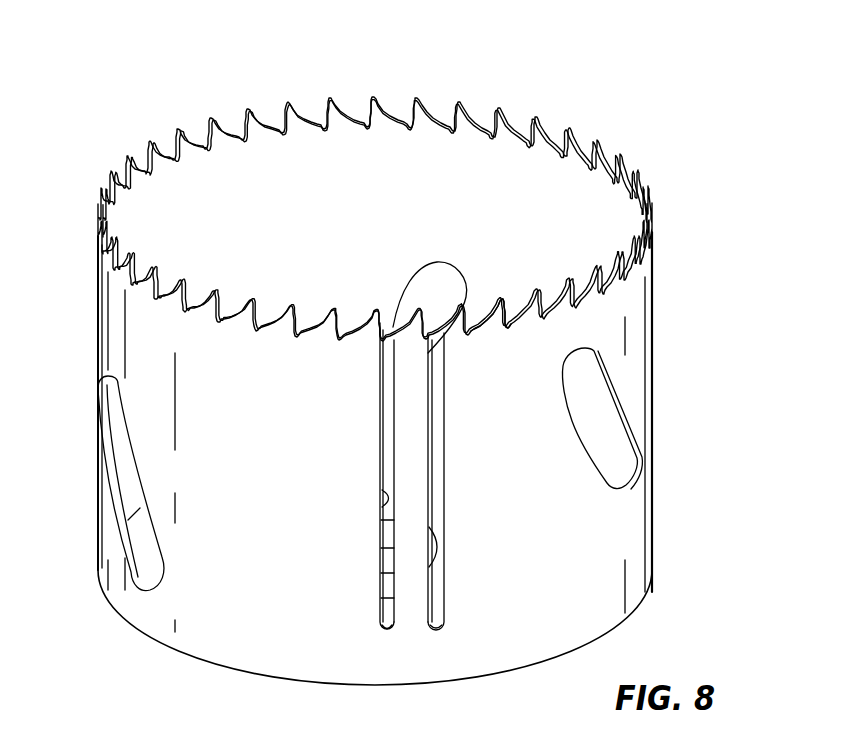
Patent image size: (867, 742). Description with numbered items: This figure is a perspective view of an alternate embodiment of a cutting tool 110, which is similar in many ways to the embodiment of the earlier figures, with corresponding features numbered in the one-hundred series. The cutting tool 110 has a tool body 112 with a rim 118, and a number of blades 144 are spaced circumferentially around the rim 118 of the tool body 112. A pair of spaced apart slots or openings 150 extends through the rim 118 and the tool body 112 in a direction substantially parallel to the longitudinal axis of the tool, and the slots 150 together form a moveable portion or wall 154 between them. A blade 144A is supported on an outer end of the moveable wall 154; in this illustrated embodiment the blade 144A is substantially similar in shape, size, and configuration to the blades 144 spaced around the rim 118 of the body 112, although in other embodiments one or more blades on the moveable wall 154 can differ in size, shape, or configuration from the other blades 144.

The cutting tool 110 is at (157, 76).
The tool body 112 is at (653, 398).
The rim 118 is at (653, 252).
The blades 144 is at (523, 302).
The blade 144A is at (430, 347).
The slots or openings 150 is at (383, 403).
The moveable portion or wall 154 is at (415, 475).